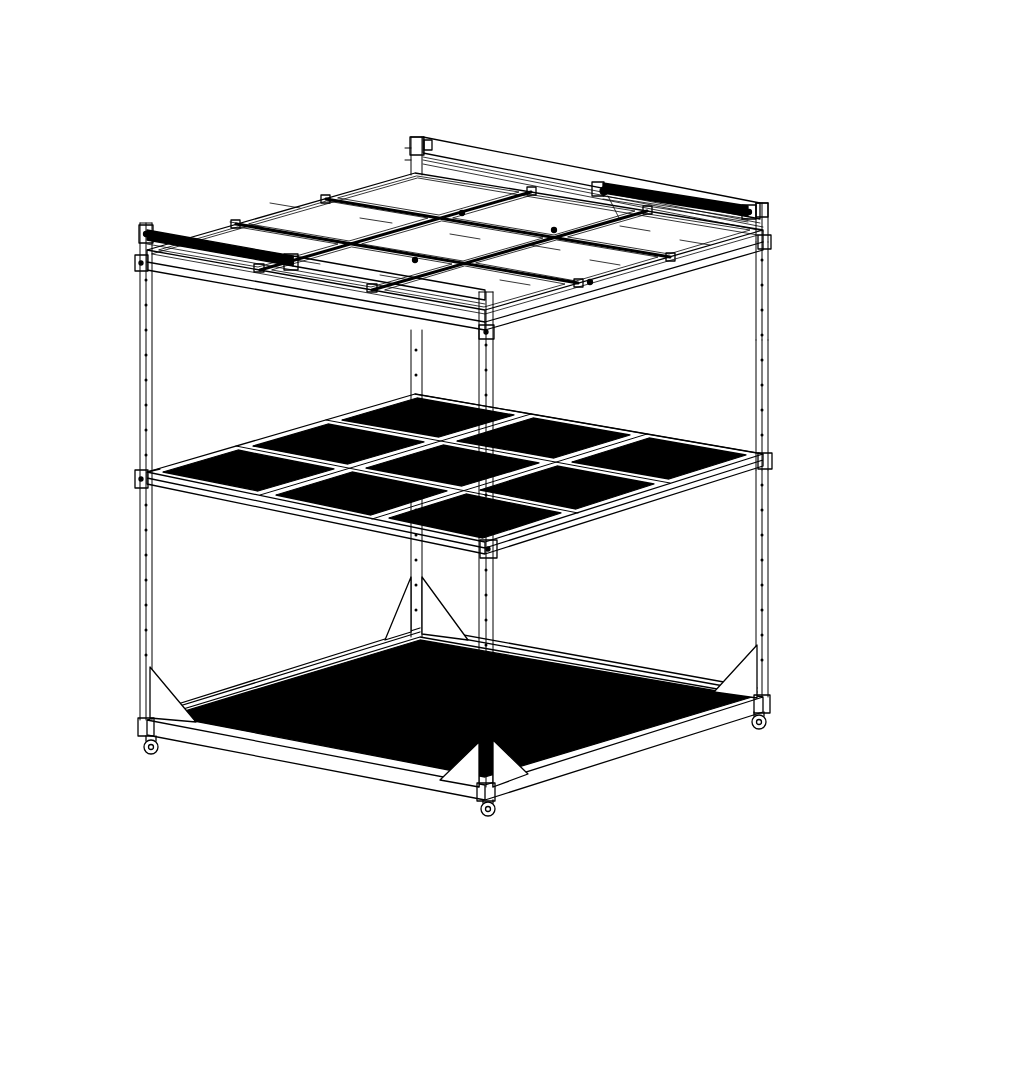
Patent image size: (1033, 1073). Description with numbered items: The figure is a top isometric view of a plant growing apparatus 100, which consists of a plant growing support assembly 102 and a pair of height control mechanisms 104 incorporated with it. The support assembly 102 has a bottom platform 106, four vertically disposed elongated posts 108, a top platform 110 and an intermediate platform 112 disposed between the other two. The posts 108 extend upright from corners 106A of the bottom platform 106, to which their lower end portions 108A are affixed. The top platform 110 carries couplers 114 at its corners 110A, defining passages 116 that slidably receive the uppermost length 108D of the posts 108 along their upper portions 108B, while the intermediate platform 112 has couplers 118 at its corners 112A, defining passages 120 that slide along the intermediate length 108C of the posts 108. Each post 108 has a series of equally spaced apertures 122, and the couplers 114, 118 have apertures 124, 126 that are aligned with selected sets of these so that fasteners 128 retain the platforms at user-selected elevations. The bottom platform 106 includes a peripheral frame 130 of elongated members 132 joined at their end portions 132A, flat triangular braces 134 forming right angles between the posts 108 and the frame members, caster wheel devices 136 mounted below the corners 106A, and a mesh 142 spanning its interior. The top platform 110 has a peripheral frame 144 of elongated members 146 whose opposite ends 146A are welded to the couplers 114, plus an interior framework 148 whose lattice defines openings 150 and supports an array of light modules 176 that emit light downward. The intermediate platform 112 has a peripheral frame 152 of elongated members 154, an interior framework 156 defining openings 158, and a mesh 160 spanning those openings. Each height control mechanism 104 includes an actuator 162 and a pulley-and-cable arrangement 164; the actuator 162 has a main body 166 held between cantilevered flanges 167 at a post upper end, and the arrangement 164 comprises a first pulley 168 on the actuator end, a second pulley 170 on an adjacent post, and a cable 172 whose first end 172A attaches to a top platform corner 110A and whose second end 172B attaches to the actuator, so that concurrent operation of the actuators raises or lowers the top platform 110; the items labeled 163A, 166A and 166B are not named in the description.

The plant growing apparatus 100 is at (702, 70).
The plant growing support assembly 102 is at (103, 733).
The height control mechanisms 104 is at (200, 225).
The bottom platform 106 is at (272, 756).
The corners 106A is at (132, 722).
The elongated posts 108 is at (752, 516).
The lower end portions 108A is at (779, 680).
The upper portions 108B is at (783, 263).
The intermediate length 108C is at (779, 448).
The uppermost length 108D is at (770, 218).
The top platform 110 is at (290, 297).
The corners 110A is at (780, 236).
The intermediate platform 112 is at (285, 511).
The corners 112A is at (152, 463).
The couplers 114 is at (756, 265).
The passages 116 is at (140, 240).
The couplers 118 is at (770, 470).
The passages 120 is at (139, 440).
The apertures 122 is at (758, 612).
The apertures 124 is at (139, 264).
The apertures 126 is at (149, 492).
The fasteners 128 is at (495, 345).
The peripheral frame 130 is at (345, 646).
The elongated members 132 is at (303, 658).
The end portions 132A is at (475, 615).
The braces 134 is at (470, 770).
The caster wheel devices 136 is at (143, 757).
The mesh 142 is at (575, 664).
The peripheral frame 144 is at (310, 204).
The elongated members 146 is at (267, 220).
The opposite ends 146A is at (405, 178).
The interior framework 148 is at (579, 278).
The openings 150 is at (452, 198).
The peripheral frame 152 is at (357, 407).
The elongated members 154 is at (248, 436).
The interior framework 156 is at (586, 500).
The openings 158 is at (397, 410).
The mesh 160 is at (668, 456).
The actuator 162 is at (510, 140).
The rail pivot 163A is at (586, 180).
The pulley-and-cable arrangement 164 is at (668, 180).
The main body 166 is at (440, 145).
The rail end bracket 166A is at (583, 172).
The rail end bracket 166B is at (415, 135).
The cantilevered flanges 167 is at (411, 150).
The first pulley 168 is at (622, 175).
The second pulley 170 is at (767, 212).
The cable 172 is at (682, 200).
The first end 172A is at (762, 200).
The second end 172B is at (613, 216).
The light modules 176 is at (426, 240).